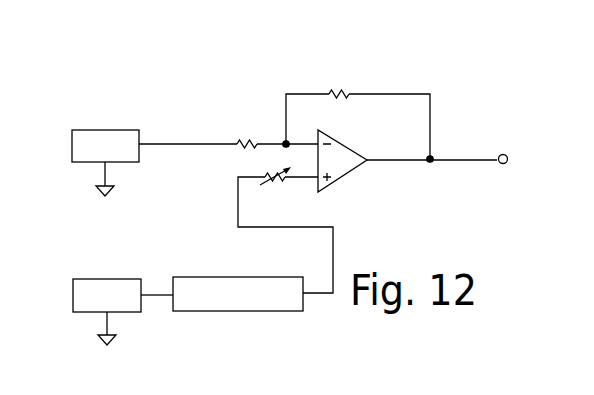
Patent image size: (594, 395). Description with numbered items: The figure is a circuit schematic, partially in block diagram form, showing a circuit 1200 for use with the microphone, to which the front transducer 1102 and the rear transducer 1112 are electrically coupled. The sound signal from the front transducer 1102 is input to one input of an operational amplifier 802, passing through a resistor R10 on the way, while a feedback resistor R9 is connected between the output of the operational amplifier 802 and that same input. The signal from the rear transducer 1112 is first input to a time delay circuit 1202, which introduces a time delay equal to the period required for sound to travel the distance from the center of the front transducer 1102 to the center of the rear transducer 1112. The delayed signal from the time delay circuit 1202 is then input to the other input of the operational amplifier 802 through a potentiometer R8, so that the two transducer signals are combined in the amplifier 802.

The circuit 1200 is at (486, 102).
The front transducer 1102 is at (105, 135).
The rear transducer 1112 is at (107, 287).
The input resistor R10 is at (247, 138).
The feedback resistor R9 is at (338, 90).
The potentiometer R8 is at (273, 183).
The operational amplifier 802 is at (341, 170).
The time delay circuit 1202 is at (268, 302).